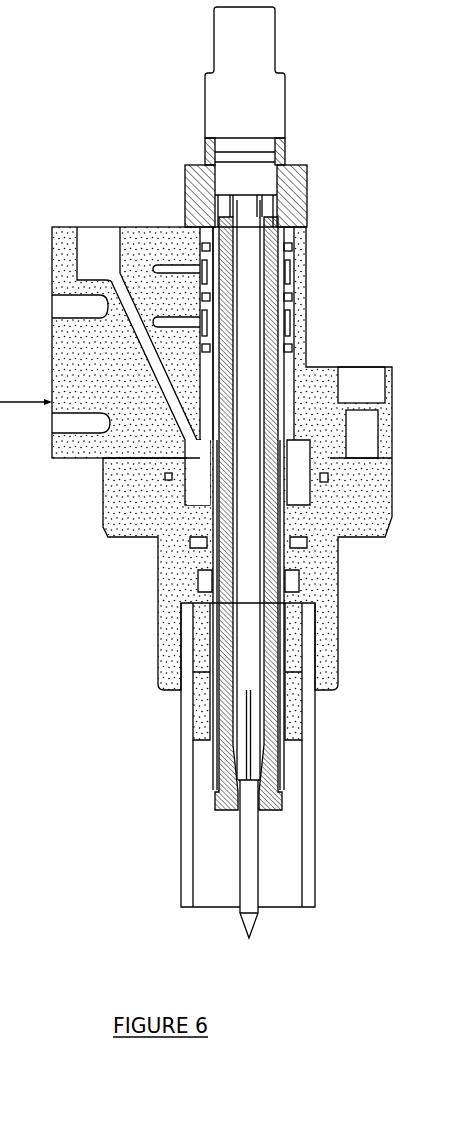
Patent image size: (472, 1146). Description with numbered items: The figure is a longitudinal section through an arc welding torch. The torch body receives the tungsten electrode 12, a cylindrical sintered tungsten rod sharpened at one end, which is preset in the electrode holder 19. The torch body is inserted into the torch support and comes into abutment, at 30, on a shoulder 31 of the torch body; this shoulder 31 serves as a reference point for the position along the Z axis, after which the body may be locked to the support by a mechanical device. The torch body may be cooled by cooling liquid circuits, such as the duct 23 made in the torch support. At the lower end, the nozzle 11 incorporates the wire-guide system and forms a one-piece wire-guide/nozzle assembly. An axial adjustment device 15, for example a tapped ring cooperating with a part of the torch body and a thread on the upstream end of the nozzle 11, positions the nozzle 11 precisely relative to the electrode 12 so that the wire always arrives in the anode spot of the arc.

The nozzle 11 is at (0, 861).
The tungsten electrode 12 is at (240, 928).
The axial adjustment device 15 is at (343, 640).
The electrode holder 19 is at (222, 654).
The duct 23 is at (180, 207).
The abutment 30 is at (312, 226).
The shoulder 31 is at (312, 198).